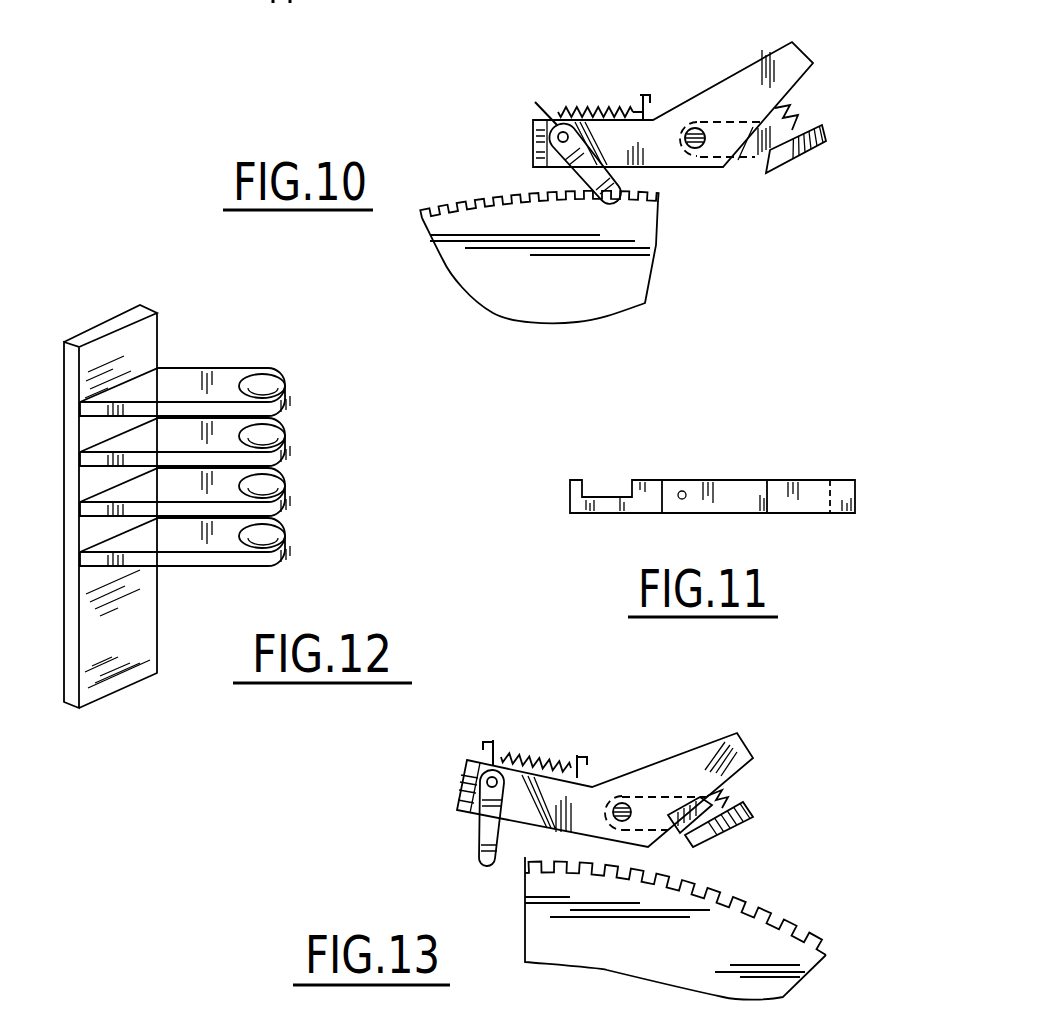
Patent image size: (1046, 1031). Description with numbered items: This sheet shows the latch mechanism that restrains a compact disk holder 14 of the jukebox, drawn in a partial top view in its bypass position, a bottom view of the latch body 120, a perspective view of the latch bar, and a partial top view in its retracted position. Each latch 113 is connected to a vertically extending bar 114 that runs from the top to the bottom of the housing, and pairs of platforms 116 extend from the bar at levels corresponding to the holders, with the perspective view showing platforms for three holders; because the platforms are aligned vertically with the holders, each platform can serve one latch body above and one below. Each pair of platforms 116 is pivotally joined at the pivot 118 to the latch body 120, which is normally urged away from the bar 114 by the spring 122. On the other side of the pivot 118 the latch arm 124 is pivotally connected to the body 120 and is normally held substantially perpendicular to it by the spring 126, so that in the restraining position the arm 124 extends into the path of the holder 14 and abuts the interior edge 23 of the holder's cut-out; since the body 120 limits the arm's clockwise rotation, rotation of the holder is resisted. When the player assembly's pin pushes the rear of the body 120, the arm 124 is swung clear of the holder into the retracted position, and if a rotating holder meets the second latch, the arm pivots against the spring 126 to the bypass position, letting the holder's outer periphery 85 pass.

In FIG. 10, the compact disk holder 14 is at (637, 288).
In FIG. 13, the compact disk holder 14 is at (806, 982).
In FIG. 10, the interior edge 23 is at (657, 228).
In FIG. 13, the interior edge 23 is at (525, 880).
In FIG. 10, the outer edge (periphery) 85 is at (487, 190).
In FIG. 13, the outer edge (periphery) 85 is at (762, 898).
In FIG. 10, the latch 113 is at (830, 57).
In FIG. 13, the latch 113 is at (650, 728).
In FIG. 10, the vertically extending bar 114 is at (795, 160).
In FIG. 12, the vertically extending bar 114 is at (63, 665).
In FIG. 13, the vertically extending bar 114 is at (725, 836).
In FIG. 10, the platform 116 is at (740, 160).
In FIG. 12, the platform 116 is at (212, 367).
In FIG. 10, the pivot 118 is at (687, 130).
In FIG. 12, the pivot 118 is at (288, 390).
In FIG. 13, the pivot 118 is at (612, 800).
In FIG. 11, the latch body 120 is at (762, 478).
In FIG. 13, the latch body 120 is at (720, 730).
In FIG. 10, the spring 122 is at (777, 125).
In FIG. 13, the spring 122 is at (712, 803).
In FIG. 10, the latch arm 124 is at (547, 155).
In FIG. 13, the latch arm 124 is at (533, 803).
In FIG. 10, the spring 126 is at (587, 110).